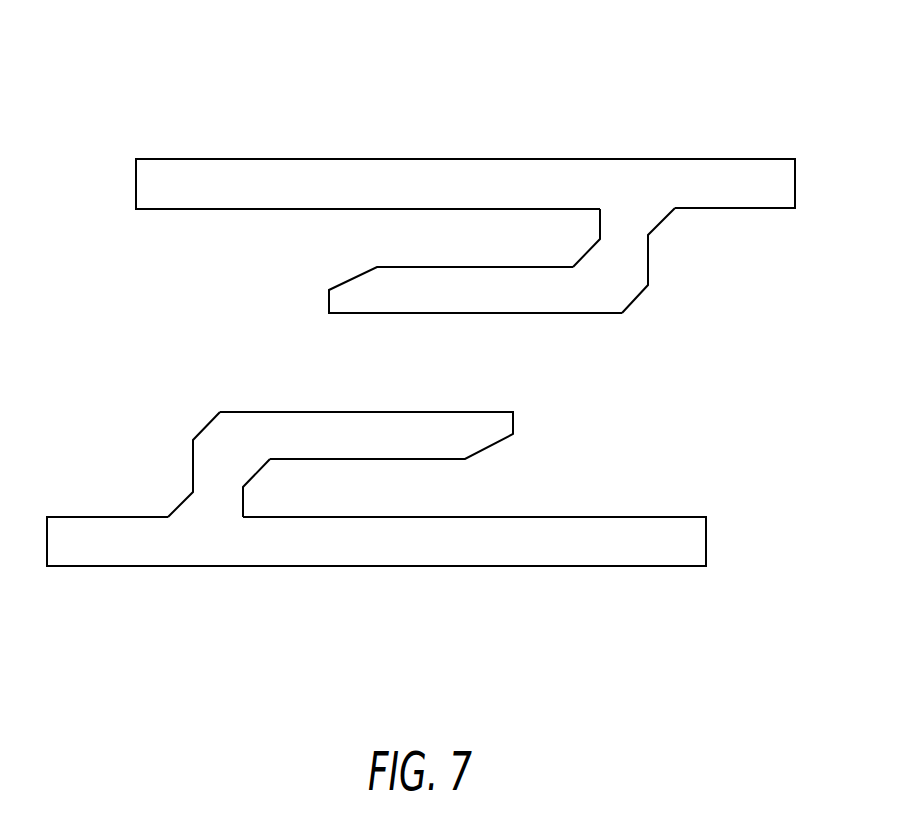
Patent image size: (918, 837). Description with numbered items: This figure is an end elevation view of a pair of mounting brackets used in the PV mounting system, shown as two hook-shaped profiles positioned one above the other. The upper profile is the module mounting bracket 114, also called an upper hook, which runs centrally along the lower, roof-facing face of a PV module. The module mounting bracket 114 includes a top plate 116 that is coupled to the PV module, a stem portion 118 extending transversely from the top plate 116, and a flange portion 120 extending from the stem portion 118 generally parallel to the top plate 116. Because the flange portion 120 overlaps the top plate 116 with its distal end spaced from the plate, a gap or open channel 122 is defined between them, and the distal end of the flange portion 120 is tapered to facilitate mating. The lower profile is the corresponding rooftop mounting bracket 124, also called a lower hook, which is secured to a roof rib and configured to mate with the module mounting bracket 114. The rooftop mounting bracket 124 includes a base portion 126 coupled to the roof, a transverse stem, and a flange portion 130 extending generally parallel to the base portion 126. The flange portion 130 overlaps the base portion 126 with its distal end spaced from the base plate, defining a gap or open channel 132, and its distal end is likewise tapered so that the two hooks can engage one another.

The module mounting bracket 114 is at (218, 90).
The top plate 116 is at (415, 168).
The stem portion 118 is at (632, 252).
The flange portion 120 is at (405, 298).
The open channel 122 is at (408, 232).
The rooftop mounting bracket 124 is at (472, 585).
The base portion 126 is at (628, 525).
The flange portion 130 is at (392, 428).
The open channel 132 is at (472, 495).